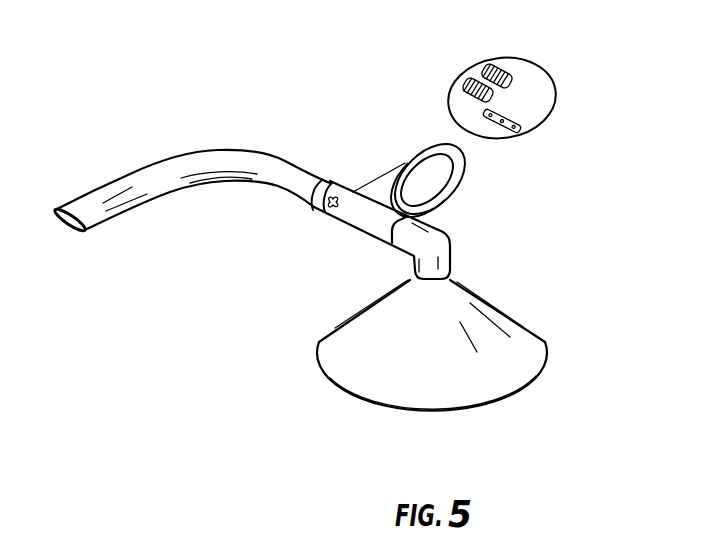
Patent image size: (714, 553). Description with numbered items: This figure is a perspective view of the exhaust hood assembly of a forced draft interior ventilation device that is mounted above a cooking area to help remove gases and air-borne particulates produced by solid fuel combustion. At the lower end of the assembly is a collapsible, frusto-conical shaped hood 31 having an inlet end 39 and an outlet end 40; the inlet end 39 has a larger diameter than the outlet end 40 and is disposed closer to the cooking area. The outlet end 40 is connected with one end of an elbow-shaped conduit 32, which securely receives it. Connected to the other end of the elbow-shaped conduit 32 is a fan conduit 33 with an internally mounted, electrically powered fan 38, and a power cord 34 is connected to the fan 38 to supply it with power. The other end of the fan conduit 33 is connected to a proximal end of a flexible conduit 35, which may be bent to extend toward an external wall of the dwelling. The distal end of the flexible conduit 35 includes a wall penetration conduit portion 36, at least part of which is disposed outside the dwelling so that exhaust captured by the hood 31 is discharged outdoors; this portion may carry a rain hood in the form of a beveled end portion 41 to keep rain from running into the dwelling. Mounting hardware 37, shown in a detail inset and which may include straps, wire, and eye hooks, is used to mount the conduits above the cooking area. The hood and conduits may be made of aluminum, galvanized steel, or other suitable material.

The hood 31 is at (497, 318).
The elbow-shaped conduit 32 is at (454, 245).
The fan conduit 33 is at (353, 190).
The power cord 34 is at (432, 152).
The flexible conduit 35 is at (246, 148).
The wall penetration conduit portion 36 is at (117, 186).
The mounting hardware 37 is at (547, 66).
The fan 38 is at (333, 217).
The inlet end 39 is at (547, 340).
The outlet end 40 is at (451, 270).
The beveled end portion 41 is at (71, 228).